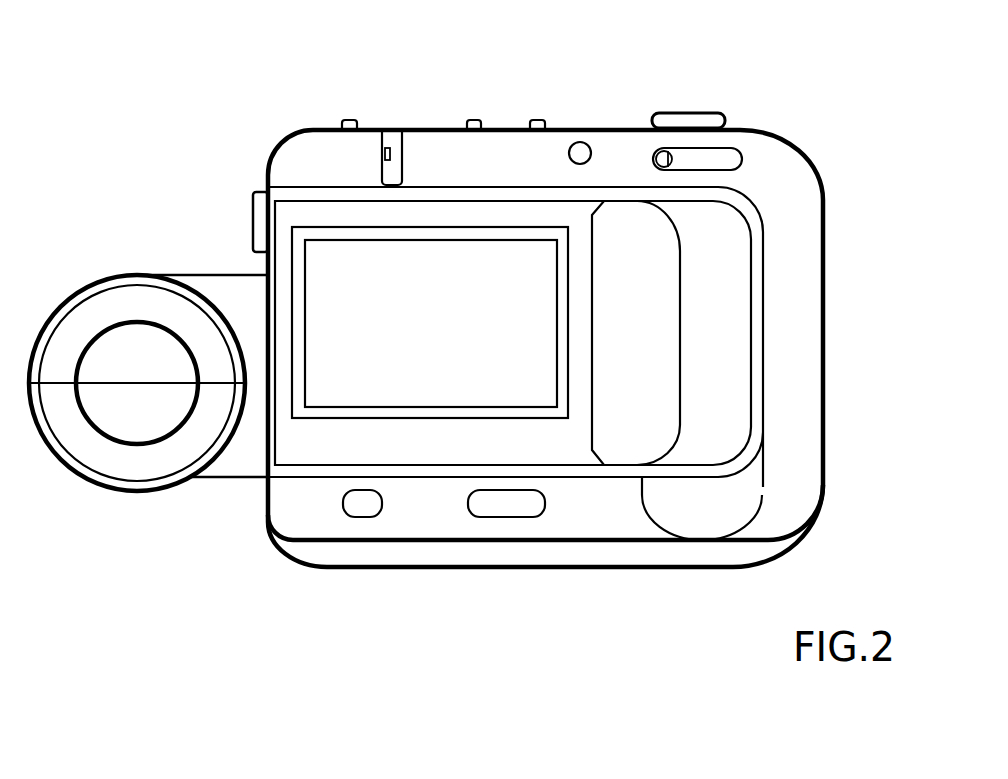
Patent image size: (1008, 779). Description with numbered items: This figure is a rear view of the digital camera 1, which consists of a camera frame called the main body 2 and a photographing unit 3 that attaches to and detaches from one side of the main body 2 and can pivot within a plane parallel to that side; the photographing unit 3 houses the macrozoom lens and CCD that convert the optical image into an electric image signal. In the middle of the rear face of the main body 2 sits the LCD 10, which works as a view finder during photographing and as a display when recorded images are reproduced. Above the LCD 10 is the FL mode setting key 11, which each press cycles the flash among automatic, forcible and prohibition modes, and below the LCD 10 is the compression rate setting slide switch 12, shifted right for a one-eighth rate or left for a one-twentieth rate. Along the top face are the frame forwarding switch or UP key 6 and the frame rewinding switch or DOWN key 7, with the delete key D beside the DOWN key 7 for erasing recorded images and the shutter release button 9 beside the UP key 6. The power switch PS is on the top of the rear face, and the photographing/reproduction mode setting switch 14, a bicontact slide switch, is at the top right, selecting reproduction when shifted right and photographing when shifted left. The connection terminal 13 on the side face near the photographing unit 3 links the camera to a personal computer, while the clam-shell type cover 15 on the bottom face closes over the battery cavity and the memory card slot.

The digital camera 1 is at (419, 110).
The main body 2 is at (627, 128).
The photographing unit 3 is at (116, 259).
The UP key 6 is at (538, 118).
The DOWN key 7 is at (473, 118).
The shutter release button 9 is at (690, 113).
The LCD 10 is at (497, 293).
The FL mode setting key 11 is at (383, 162).
The compression rate setting slide switch 12 is at (343, 503).
The connection terminal 13 is at (253, 226).
The photographing/reproduction mode setting switch 14 is at (652, 158).
The clam-shell type cover 15 is at (613, 567).
The delete key D is at (345, 120).
The power switch PS is at (580, 142).